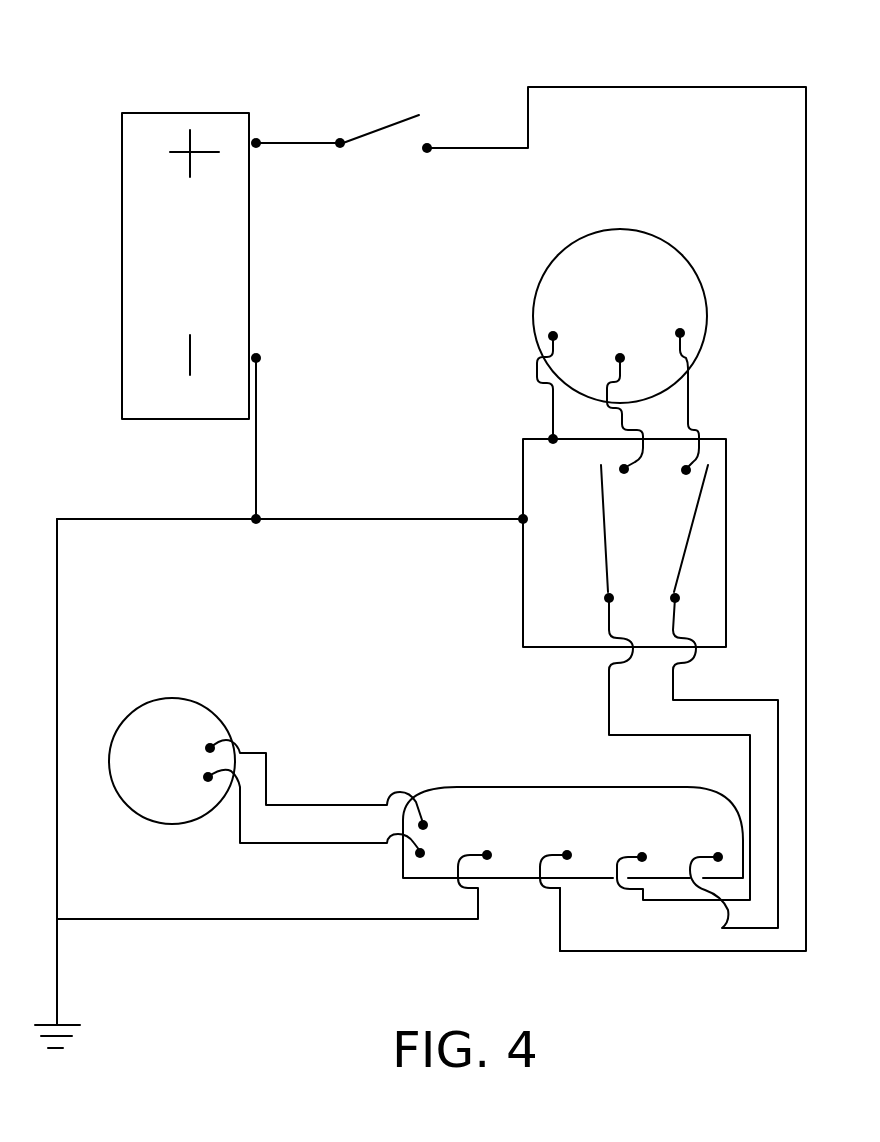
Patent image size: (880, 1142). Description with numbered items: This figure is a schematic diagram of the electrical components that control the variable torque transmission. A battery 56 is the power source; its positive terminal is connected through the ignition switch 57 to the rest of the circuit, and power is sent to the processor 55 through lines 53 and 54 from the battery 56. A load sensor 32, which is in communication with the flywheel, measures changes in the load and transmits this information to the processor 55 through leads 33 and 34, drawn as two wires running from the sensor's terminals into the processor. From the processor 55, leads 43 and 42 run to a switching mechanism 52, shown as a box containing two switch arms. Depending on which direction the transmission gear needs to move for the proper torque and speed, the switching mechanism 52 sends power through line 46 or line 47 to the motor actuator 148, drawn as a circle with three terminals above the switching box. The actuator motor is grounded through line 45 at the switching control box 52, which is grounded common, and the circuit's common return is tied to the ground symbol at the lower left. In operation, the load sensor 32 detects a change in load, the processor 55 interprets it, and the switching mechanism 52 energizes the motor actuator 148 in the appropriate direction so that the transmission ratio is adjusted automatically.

The battery 56 is at (123, 203).
The ignition switch 57 is at (421, 94).
The motor actuator 148 is at (663, 236).
The line 47 is at (550, 384).
The line 46 is at (643, 447).
The line 45 is at (688, 399).
The switching mechanism 52 is at (742, 541).
The lead 43 is at (748, 815).
The lead 42 is at (778, 875).
The processor 55 is at (708, 812).
The load sensor 32 is at (112, 743).
The lead 33 is at (309, 806).
The lead 34 is at (260, 844).
The line 53 is at (322, 922).
The line 54 is at (608, 952).